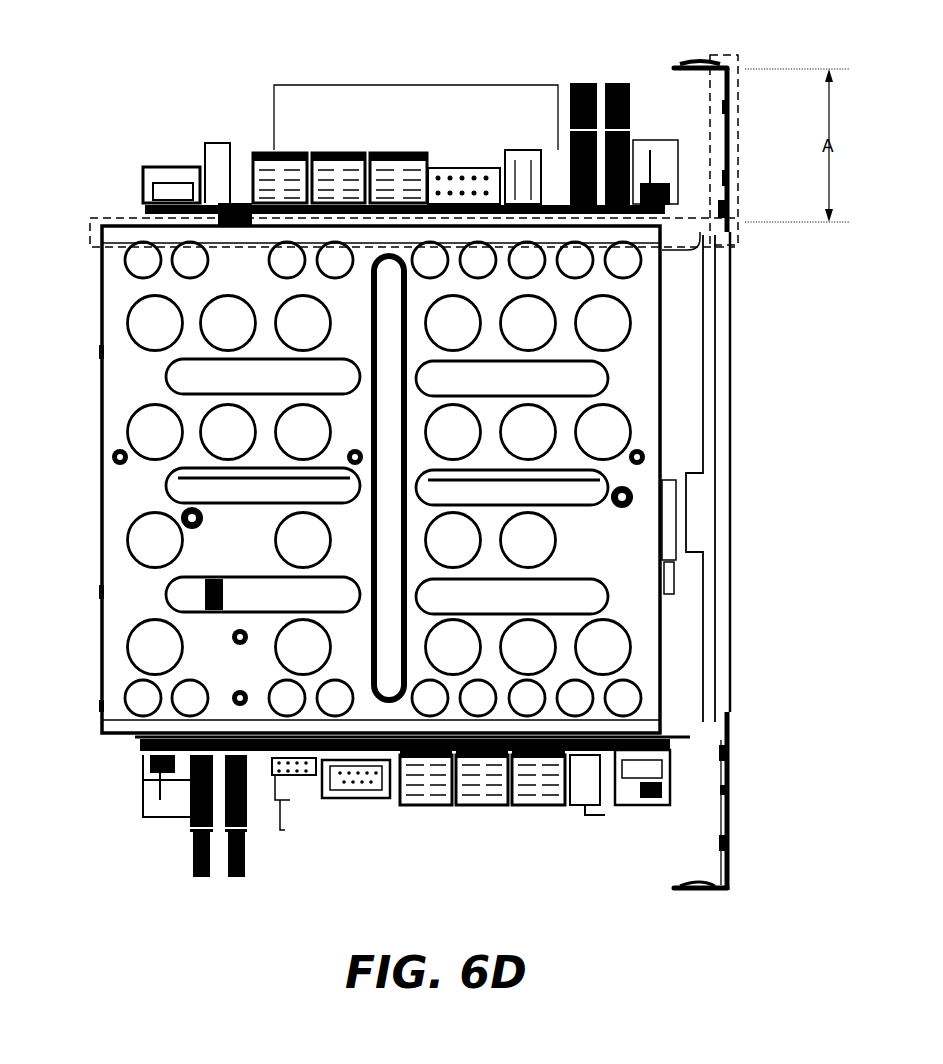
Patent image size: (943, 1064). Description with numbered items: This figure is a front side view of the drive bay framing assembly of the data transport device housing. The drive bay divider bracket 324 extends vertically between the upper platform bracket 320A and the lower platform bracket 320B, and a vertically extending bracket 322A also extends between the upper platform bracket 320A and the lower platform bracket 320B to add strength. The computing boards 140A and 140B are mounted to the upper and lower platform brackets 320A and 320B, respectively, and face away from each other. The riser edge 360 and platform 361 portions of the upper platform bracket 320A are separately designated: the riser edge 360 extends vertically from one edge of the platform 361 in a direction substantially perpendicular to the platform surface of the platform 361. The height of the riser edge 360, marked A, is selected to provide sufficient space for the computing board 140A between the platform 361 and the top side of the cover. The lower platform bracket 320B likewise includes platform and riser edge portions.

The computing board 140A is at (400, 52).
The computing board 140B is at (414, 862).
The upper platform bracket 320A is at (690, 66).
The lower platform bracket 320B is at (730, 870).
The vertically extending bracket 322A is at (722, 522).
The drive bay divider bracket 324 is at (108, 405).
The riser edge 360 is at (738, 166).
The platform 361 is at (88, 240).